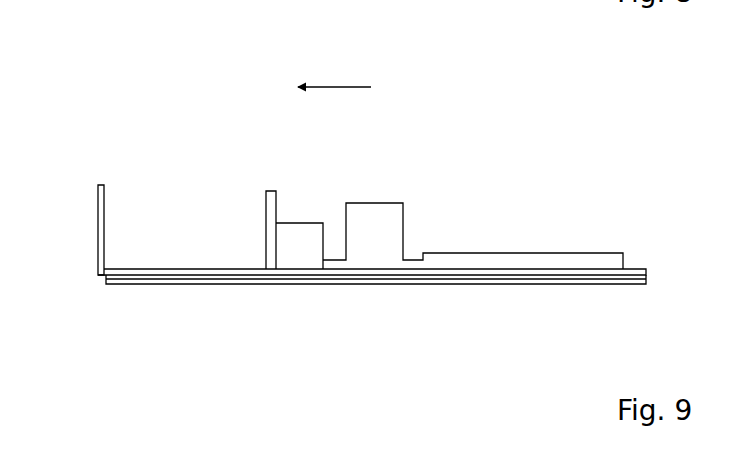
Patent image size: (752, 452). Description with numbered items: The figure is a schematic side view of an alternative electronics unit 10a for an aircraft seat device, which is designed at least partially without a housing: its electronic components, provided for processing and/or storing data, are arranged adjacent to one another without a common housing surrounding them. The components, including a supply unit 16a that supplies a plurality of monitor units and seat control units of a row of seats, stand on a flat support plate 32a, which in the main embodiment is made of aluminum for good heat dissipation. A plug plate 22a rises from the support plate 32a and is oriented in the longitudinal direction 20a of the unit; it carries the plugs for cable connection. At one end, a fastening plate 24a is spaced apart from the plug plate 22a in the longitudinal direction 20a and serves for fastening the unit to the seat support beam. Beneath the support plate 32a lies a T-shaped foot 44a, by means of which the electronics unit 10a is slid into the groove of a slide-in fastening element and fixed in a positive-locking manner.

The electronics unit 10a is at (420, 186).
The supply unit 16a is at (299, 252).
The longitudinal direction 20a is at (333, 86).
The plug plate 22a is at (265, 216).
The fastening plate 24a is at (100, 184).
The support plate 32a is at (209, 284).
The T-shaped foot 44a is at (131, 284).